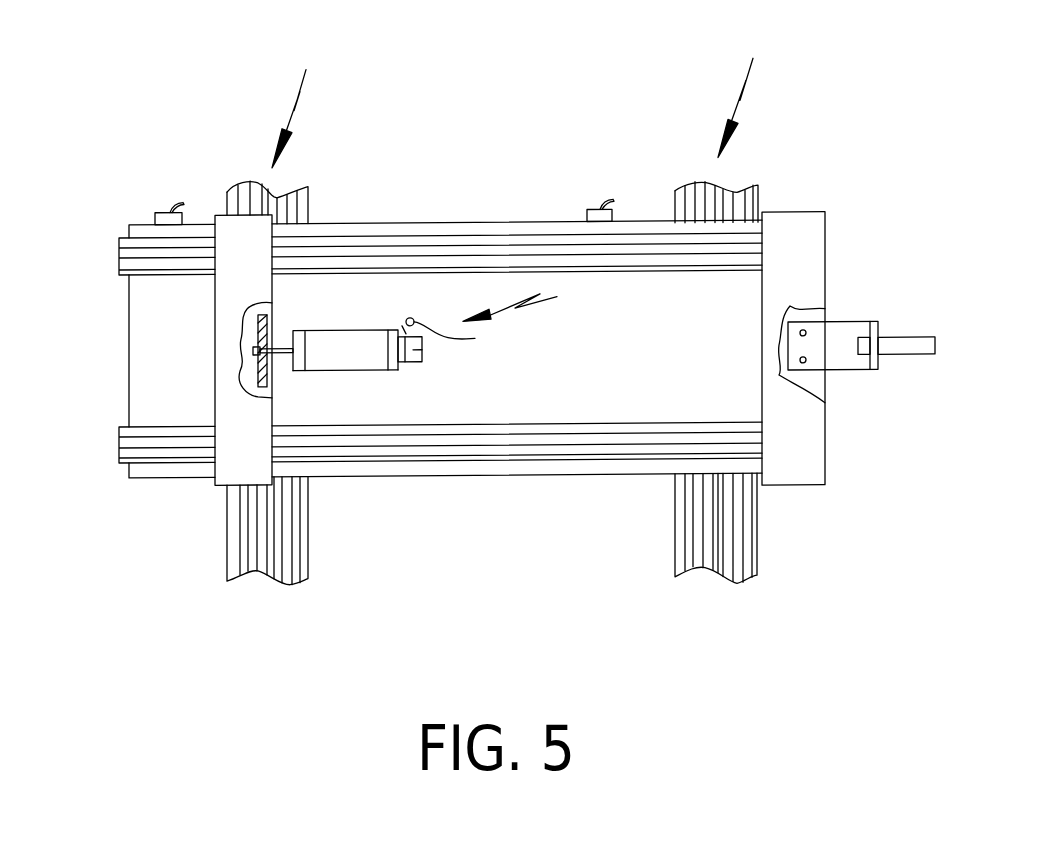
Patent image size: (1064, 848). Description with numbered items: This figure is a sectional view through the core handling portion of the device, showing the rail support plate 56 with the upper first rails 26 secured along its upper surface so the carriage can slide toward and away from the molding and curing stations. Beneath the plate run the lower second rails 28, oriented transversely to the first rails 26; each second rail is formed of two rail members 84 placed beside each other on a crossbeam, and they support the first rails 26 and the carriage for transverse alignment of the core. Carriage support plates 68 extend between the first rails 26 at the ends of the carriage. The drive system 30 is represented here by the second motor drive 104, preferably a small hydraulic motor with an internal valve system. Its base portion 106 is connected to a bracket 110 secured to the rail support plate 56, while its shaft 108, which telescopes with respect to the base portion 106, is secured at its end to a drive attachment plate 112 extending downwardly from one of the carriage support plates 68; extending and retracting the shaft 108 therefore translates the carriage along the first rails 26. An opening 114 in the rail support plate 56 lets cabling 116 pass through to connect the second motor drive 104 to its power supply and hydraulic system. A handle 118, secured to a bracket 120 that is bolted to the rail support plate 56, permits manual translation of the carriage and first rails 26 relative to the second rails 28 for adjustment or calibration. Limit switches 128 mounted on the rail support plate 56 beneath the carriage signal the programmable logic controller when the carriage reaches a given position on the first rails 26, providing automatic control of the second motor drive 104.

The first rails 26 is at (525, 231).
The second rails 28 is at (521, 96).
The drive system 30 is at (528, 300).
The rail support plate 56 is at (678, 368).
The carriage support plates 68 is at (800, 234).
The rail members 84 is at (246, 185).
The second motor drive 104 is at (348, 347).
The base portion 106 is at (329, 357).
The shaft 108 is at (281, 340).
The bracket 110 is at (415, 353).
The drive attachment plate 112 is at (258, 332).
The opening 114 is at (475, 341).
The cabling 116 is at (413, 322).
The handle 118 is at (928, 350).
The bracket 120 is at (843, 343).
The limit switches 128 is at (156, 213).